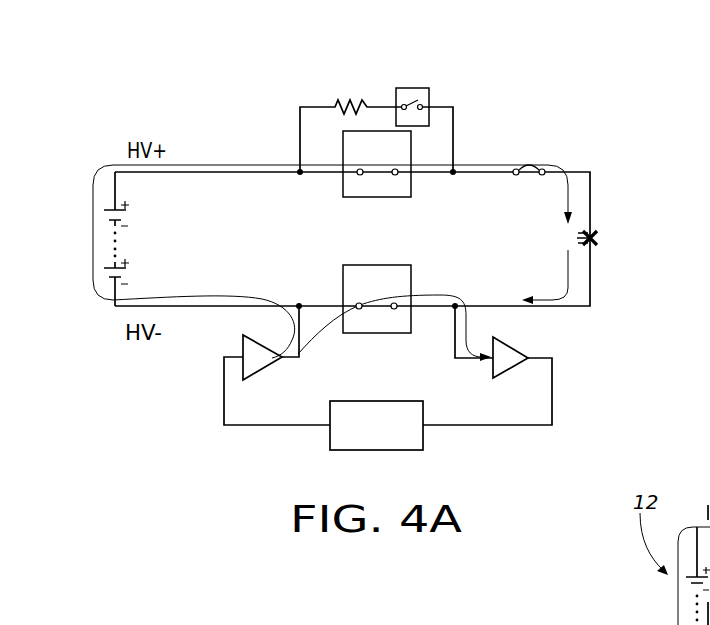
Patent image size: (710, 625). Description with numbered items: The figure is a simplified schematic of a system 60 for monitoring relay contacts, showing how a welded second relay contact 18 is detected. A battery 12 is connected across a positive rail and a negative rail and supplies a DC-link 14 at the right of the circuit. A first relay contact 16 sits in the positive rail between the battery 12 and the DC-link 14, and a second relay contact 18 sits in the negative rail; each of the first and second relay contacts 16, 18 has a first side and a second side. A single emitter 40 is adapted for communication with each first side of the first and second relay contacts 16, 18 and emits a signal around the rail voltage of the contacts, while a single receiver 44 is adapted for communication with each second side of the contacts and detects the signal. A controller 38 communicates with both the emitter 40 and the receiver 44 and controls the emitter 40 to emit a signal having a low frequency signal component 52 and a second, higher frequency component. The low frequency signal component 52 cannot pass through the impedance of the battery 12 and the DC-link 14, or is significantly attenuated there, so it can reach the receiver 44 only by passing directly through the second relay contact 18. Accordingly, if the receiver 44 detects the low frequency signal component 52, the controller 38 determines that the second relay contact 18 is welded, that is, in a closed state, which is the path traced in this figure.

The battery 12 is at (77, 201).
The DC-link 14 is at (604, 207).
The first relay contact 16 is at (373, 197).
The second relay contact 18 is at (412, 290).
The controller 38 is at (330, 435).
The emitter 40 is at (263, 370).
The receiver 44 is at (493, 378).
The low frequency signal component 52 is at (231, 152).
The system 60 is at (381, 71).